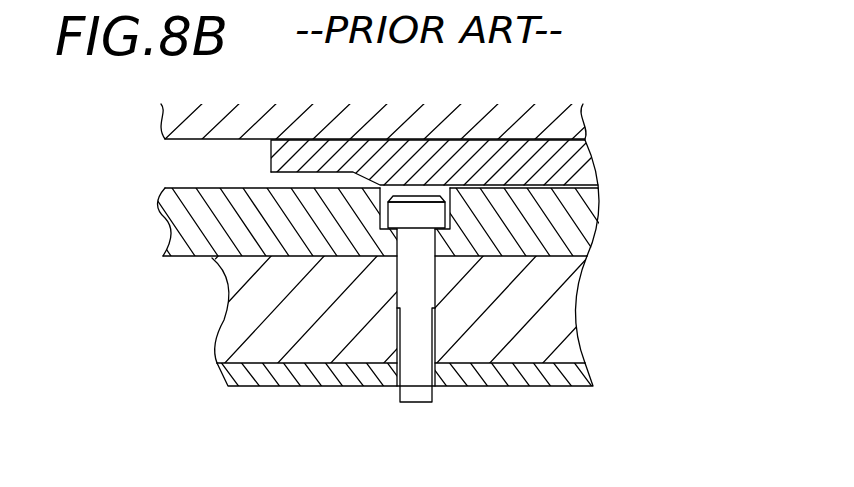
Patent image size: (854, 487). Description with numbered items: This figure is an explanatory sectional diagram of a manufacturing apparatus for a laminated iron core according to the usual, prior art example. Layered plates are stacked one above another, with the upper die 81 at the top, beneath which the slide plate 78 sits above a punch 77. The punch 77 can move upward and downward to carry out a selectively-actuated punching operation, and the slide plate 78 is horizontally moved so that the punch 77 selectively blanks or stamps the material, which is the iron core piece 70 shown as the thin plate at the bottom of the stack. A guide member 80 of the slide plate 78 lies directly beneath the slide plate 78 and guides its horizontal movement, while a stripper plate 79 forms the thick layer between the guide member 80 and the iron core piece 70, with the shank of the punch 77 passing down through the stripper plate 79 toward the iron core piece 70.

The iron core piece 70 is at (541, 382).
The punch 77 is at (408, 272).
The slide plate 78 is at (572, 155).
The stripper plate 79 is at (560, 310).
The guide member 80 is at (575, 212).
The upper die 81 is at (512, 122).